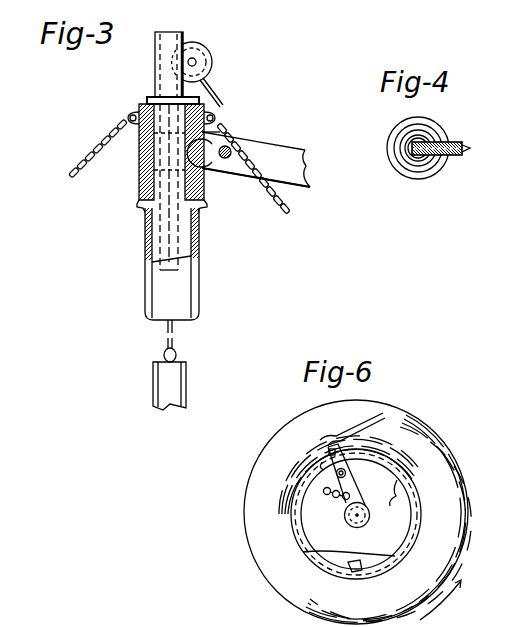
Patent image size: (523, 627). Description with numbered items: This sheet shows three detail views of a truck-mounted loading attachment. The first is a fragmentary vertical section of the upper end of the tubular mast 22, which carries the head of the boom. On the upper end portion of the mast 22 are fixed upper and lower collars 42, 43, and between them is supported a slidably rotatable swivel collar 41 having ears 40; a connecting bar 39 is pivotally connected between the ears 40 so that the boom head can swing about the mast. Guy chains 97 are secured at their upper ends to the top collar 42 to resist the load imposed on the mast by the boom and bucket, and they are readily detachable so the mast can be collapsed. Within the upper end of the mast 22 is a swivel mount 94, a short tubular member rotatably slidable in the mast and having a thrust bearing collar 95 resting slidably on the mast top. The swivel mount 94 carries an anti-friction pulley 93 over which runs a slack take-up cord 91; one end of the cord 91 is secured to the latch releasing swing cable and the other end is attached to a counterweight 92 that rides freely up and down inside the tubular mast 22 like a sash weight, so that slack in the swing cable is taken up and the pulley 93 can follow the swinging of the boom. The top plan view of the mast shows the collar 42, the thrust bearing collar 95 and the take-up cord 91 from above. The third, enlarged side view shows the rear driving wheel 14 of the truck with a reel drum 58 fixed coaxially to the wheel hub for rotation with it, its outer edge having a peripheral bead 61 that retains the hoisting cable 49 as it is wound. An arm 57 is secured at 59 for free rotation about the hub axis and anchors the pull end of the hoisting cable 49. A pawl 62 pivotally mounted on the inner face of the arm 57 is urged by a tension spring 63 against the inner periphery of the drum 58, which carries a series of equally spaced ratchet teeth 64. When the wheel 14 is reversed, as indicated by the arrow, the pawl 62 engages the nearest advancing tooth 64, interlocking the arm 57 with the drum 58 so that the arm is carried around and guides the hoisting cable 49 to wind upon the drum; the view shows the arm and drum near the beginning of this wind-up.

In FIG. 6, the rear driving wheel 14 is at (266, 571).
In FIG. 3, the mast 22 is at (199, 292).
In FIG. 3, the connecting bar 39 is at (272, 156).
In FIG. 3, the ears 40 is at (210, 172).
In FIG. 3, the swivel collar 41 is at (152, 170).
In FIG. 3, the upper collar 42 is at (128, 116).
In FIG. 4, the upper collar 42 is at (397, 130).
In FIG. 3, the lower collar 43 is at (140, 197).
In FIG. 6, the hoisting cable 49 is at (386, 418).
In FIG. 6, the arm 57 is at (326, 462).
In FIG. 6, the reel drum 58 is at (418, 530).
In FIG. 6, the arm pivot 59 is at (369, 523).
In FIG. 6, the peripheral bead 61 is at (356, 574).
In FIG. 6, the pawl 62 is at (347, 475).
In FIG. 6, the tension spring 63 is at (333, 496).
In FIG. 6, the ratchet teeth 64 is at (388, 500).
In FIG. 3, the slack take-up cord 91 is at (216, 90).
In FIG. 4, the slack take-up cord 91 is at (471, 150).
In FIG. 3, the counterweight 92 is at (188, 374).
In FIG. 3, the pulley 93 is at (204, 66).
In FIG. 3, the swivel mount 94 is at (170, 38).
In FIG. 3, the thrust bearing collar 95 is at (147, 100).
In FIG. 4, the thrust bearing collar 95 is at (426, 140).
In FIG. 3, the guy chains 97 is at (116, 124).